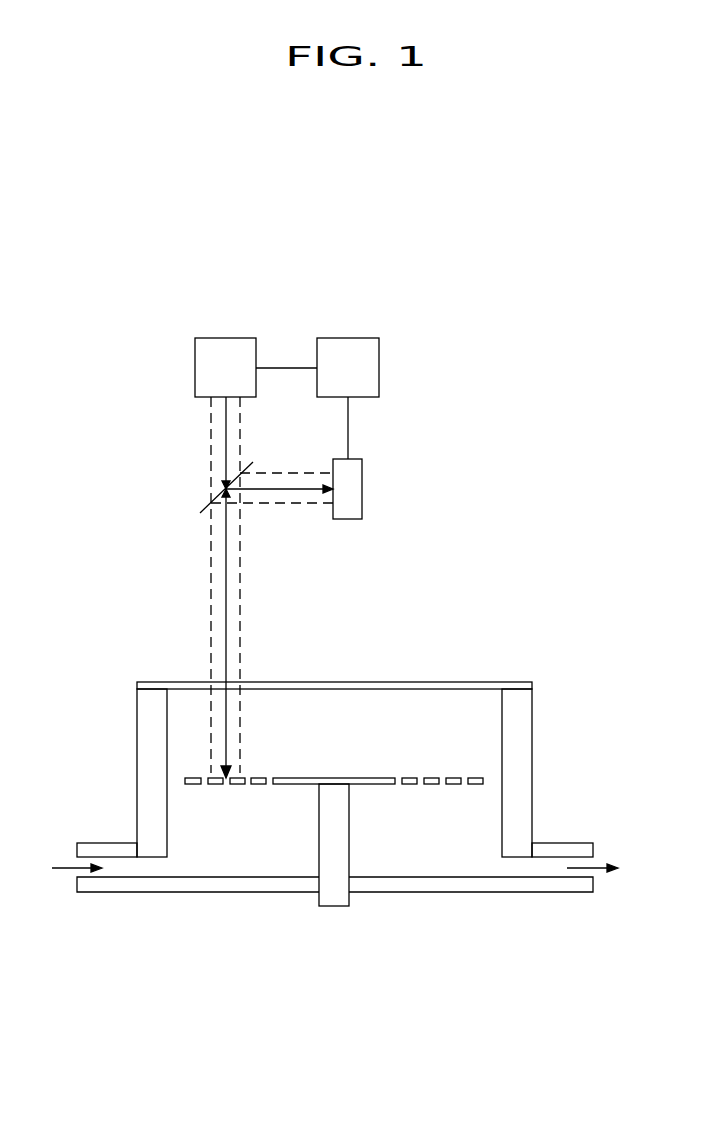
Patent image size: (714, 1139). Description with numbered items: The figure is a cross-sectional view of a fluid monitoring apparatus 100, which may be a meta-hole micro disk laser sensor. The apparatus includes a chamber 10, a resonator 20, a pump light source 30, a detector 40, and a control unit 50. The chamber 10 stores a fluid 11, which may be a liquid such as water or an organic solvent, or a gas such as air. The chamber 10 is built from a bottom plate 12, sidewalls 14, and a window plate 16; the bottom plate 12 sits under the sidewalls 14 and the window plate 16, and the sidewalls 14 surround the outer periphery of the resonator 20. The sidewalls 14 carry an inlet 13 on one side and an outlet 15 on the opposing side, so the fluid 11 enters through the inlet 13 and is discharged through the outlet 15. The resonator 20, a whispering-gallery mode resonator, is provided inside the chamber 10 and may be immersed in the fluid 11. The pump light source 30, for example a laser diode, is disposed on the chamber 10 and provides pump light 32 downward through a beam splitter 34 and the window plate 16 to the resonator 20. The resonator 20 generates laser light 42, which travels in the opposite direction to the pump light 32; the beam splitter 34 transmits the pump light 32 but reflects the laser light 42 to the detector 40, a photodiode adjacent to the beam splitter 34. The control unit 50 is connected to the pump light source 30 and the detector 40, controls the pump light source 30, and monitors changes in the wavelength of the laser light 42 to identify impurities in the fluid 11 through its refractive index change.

The fluid monitoring apparatus 100 is at (572, 327).
The chamber 10 is at (368, 770).
The fluid 11 is at (70, 866).
The bottom plate 12 is at (347, 847).
The inlet 13 is at (152, 870).
The sidewalls 14 is at (519, 753).
The outlet 15 is at (515, 870).
The window plate 16 is at (483, 687).
The resonator 20 is at (333, 778).
The pump light source 30 is at (230, 338).
The pump light 32 is at (226, 443).
The beam splitter 34 is at (205, 508).
The detector 40 is at (352, 489).
The laser light 42 is at (290, 490).
The control unit 50 is at (352, 338).